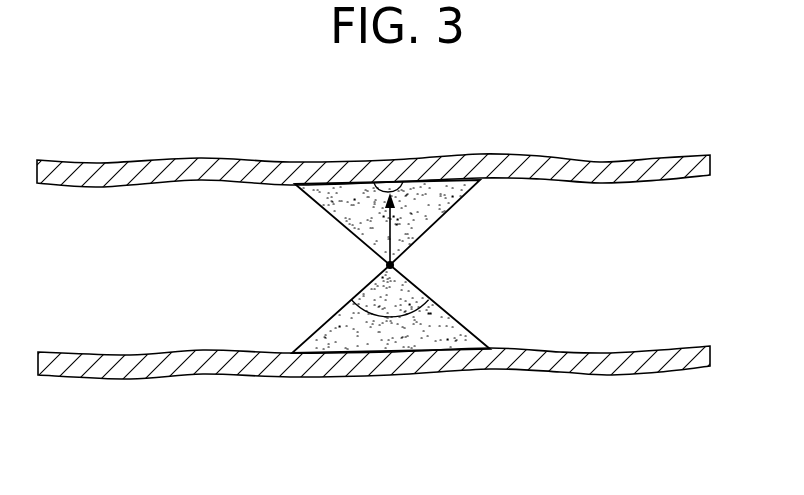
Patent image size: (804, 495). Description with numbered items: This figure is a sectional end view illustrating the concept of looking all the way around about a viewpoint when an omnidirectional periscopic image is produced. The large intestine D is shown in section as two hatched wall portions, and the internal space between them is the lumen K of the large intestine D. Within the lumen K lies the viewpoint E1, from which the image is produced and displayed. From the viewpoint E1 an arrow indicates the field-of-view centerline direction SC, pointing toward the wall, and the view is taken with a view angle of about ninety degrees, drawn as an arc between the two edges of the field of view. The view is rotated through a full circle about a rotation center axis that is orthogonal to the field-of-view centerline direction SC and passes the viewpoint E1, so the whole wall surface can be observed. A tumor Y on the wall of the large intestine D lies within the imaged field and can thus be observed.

The large intestine D is at (594, 160).
The lumen K is at (152, 240).
The tumor Y is at (389, 186).
The viewpoint E1 is at (386, 265).
The field-of-view centerline direction SC is at (394, 228).